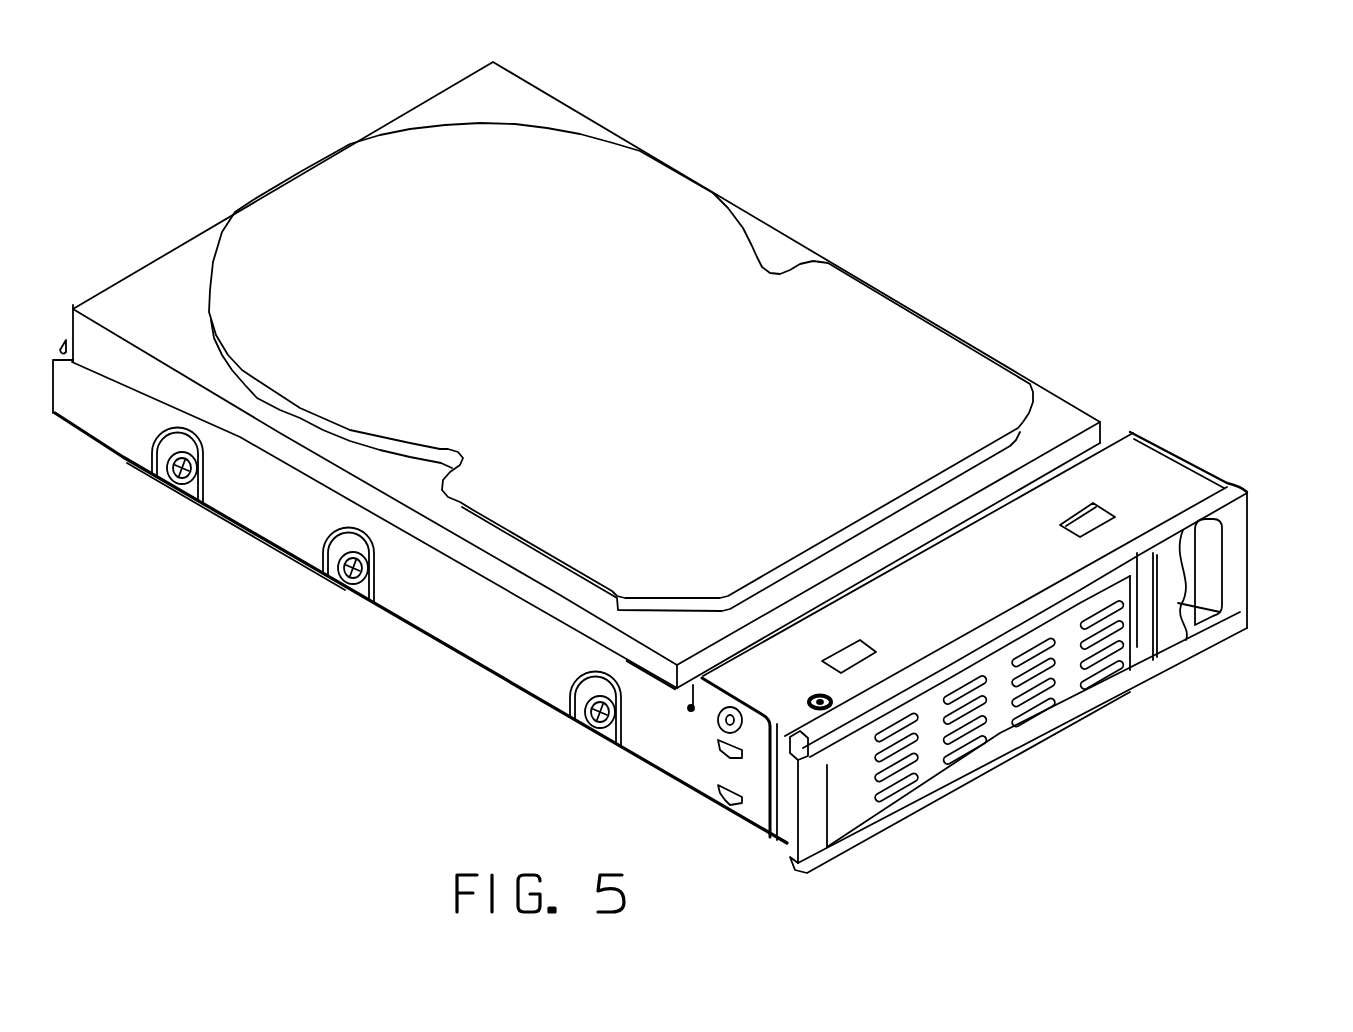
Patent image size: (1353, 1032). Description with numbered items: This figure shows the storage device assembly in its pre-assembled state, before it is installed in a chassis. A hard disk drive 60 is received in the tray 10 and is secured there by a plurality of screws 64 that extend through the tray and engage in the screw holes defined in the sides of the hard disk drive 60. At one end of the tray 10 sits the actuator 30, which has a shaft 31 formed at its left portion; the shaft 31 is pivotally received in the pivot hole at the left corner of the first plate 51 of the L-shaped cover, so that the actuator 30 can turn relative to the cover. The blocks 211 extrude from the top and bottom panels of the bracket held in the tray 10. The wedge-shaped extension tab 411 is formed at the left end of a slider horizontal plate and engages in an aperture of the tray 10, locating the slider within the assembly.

The tray 10 is at (540, 673).
The actuator 30 is at (1063, 688).
The shaft 31 is at (823, 710).
The first plate 51 is at (1148, 477).
The hard disk drive 60 is at (908, 368).
The screws 64 is at (353, 587).
The blocks 211 is at (1097, 518).
The extension tab 411 is at (723, 805).